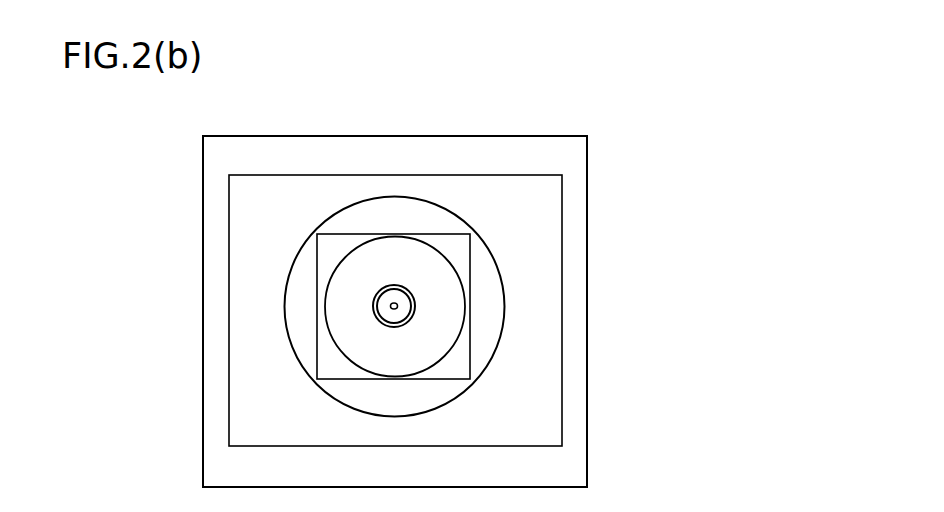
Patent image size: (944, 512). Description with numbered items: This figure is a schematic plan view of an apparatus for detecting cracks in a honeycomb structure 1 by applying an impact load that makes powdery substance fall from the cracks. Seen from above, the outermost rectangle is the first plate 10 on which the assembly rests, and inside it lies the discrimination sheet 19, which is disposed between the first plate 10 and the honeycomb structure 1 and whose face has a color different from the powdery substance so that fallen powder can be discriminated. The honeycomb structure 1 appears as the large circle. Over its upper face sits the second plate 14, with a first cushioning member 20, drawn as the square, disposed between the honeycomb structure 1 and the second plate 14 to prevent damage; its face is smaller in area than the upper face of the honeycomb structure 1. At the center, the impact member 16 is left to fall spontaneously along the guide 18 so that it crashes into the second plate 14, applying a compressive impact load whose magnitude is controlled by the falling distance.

The honeycomb structure 1 is at (285, 292).
The first plate 10 is at (587, 443).
The second plate 14 is at (456, 341).
The impact member 16 is at (410, 313).
The guide 18 is at (415, 300).
The discrimination sheet 19 is at (229, 397).
The first cushioning member 20 is at (317, 262).